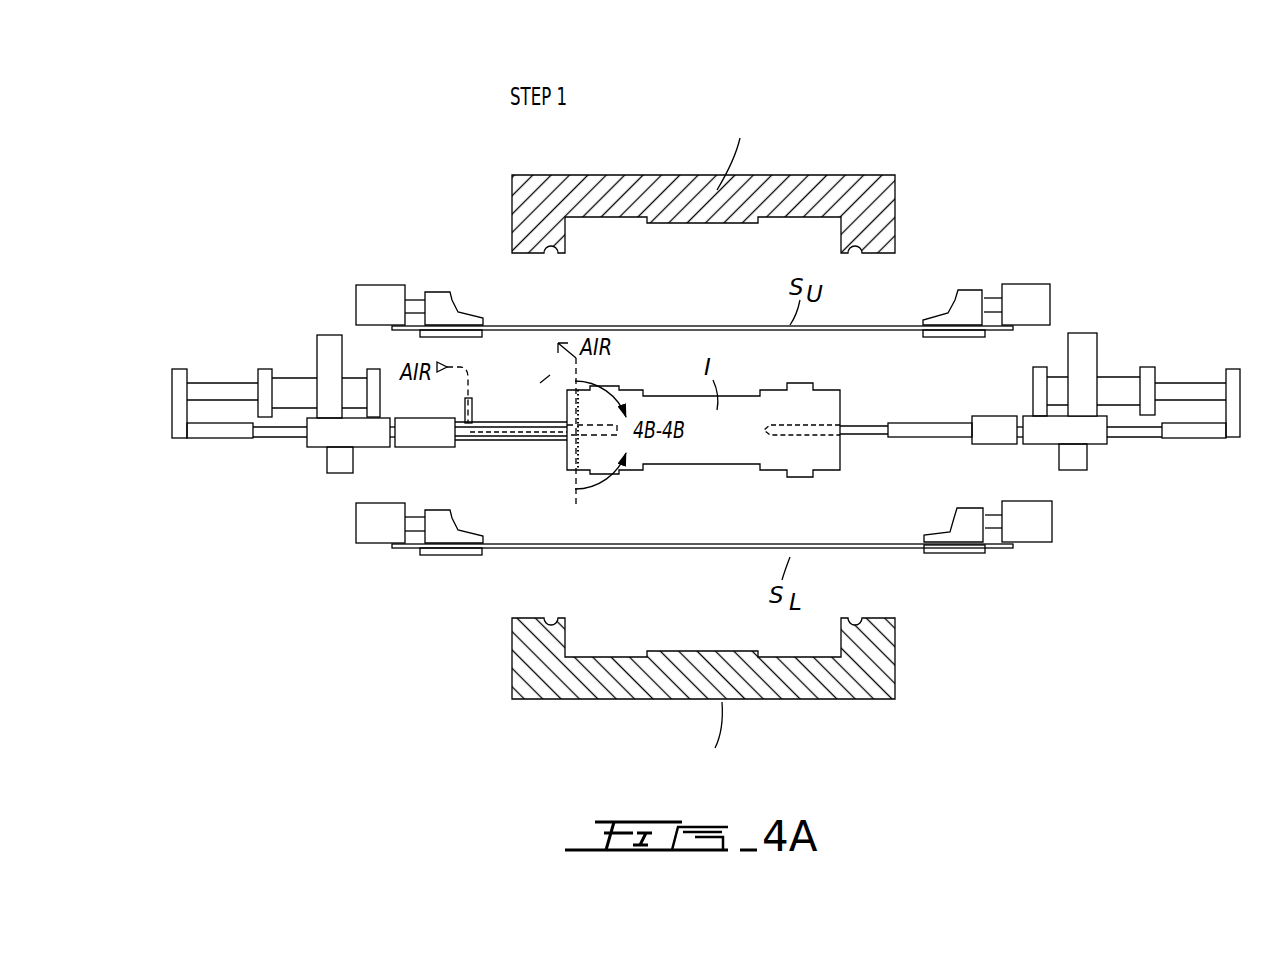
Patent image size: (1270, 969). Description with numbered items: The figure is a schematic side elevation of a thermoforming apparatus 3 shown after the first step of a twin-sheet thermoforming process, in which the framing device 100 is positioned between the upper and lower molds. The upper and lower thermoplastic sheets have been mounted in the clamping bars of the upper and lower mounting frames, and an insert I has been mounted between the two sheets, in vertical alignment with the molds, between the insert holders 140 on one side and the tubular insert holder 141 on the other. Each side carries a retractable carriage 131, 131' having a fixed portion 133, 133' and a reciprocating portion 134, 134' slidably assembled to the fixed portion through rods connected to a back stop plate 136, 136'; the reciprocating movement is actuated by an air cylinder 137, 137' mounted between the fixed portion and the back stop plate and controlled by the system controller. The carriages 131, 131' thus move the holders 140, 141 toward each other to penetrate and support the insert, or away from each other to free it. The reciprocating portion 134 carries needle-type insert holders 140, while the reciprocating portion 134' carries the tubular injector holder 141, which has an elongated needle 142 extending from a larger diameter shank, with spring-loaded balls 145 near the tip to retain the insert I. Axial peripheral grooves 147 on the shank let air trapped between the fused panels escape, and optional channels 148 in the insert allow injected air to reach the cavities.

The thermoforming apparatus 3 is at (883, 87).
The framing device 100 is at (1057, 195).
The front retractable carriage 131 is at (1056, 362).
The retractable carriage 131' is at (341, 355).
The fixed portion 133 is at (1083, 451).
The fixed portion 133' is at (340, 465).
The reciprocating portion 134 is at (986, 454).
The reciprocating portion 134' is at (426, 459).
The back stop plate 136 is at (1211, 424).
The back stop plate 136' is at (209, 430).
The air cylinder 137 is at (1094, 375).
The air cylinder 137' is at (319, 374).
The insert holders 140 is at (898, 423).
The tubular insert holders 141 is at (467, 448).
The elongated needle 142 is at (603, 422).
The spring loaded balls 145 is at (533, 472).
The axial peripheral grooves 147 is at (500, 438).
The channels 148 is at (572, 402).